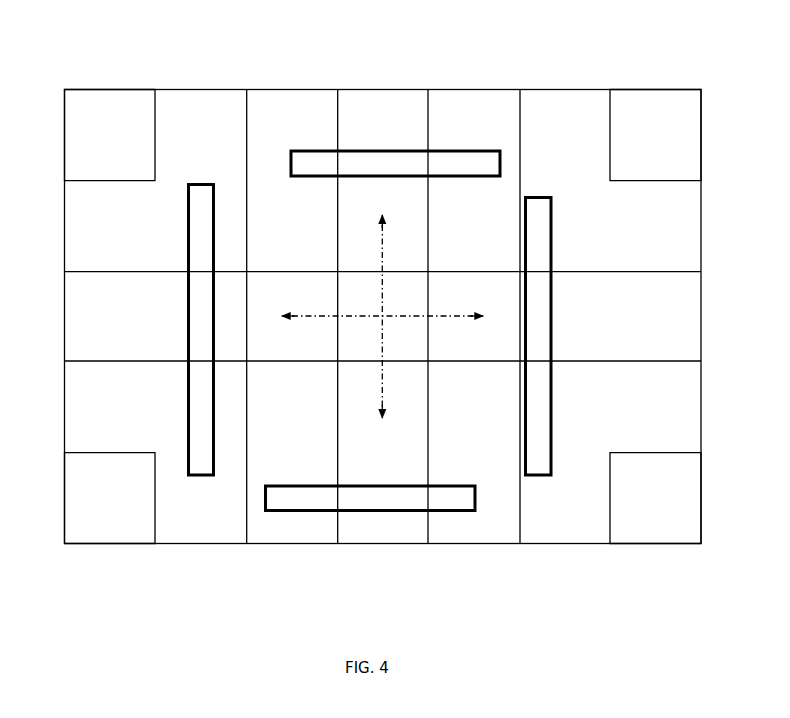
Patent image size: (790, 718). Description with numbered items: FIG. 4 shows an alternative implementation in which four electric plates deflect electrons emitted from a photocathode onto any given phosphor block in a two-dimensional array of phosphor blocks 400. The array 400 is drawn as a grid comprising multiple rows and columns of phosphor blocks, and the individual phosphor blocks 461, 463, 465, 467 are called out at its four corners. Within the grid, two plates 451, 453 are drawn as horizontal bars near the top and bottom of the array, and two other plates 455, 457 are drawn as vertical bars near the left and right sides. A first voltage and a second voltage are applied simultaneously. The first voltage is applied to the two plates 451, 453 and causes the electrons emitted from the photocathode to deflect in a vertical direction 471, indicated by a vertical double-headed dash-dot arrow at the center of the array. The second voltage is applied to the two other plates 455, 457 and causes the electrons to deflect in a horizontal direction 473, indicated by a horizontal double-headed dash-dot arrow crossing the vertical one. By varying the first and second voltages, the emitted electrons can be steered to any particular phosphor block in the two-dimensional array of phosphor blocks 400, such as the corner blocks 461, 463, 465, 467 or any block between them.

The 2D array of phosphor blocks 400 is at (383, 304).
The plate 451 is at (452, 150).
The plate 453 is at (368, 511).
The plate 455 is at (200, 477).
The plate 457 is at (538, 476).
The phosphor block 461 is at (95, 97).
The phosphor block 463 is at (660, 100).
The phosphor block 465 is at (103, 537).
The phosphor block 467 is at (667, 533).
The vertical direction 471 is at (385, 250).
The horizontal direction 473 is at (313, 316).